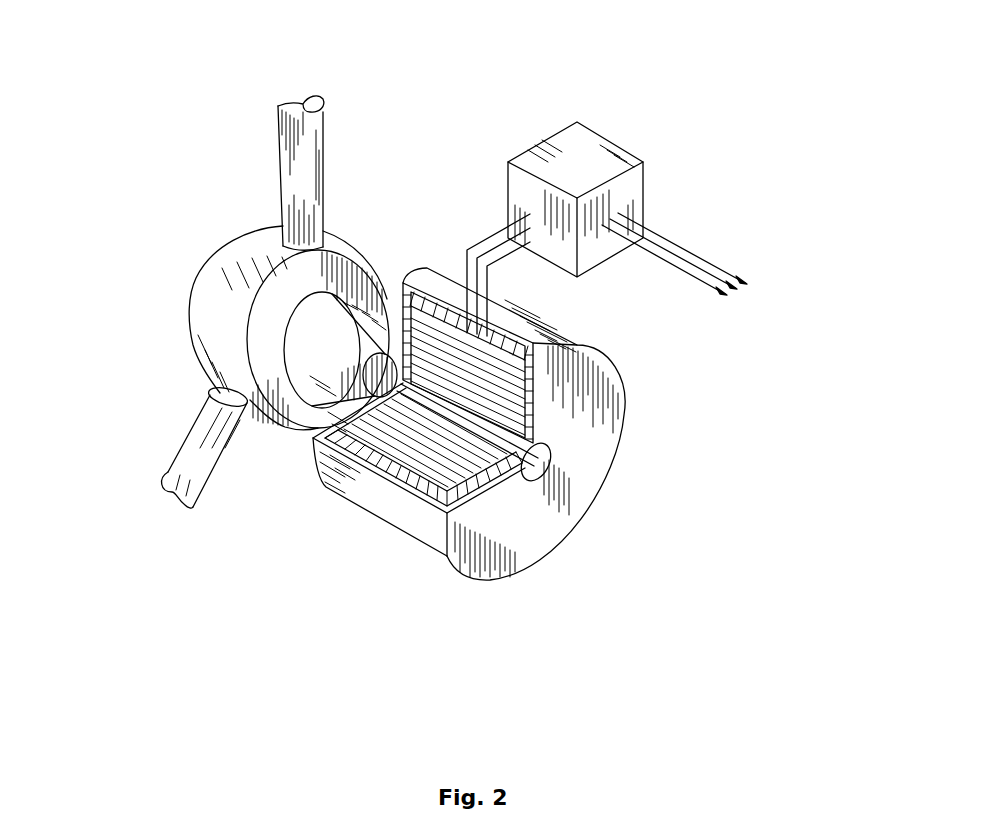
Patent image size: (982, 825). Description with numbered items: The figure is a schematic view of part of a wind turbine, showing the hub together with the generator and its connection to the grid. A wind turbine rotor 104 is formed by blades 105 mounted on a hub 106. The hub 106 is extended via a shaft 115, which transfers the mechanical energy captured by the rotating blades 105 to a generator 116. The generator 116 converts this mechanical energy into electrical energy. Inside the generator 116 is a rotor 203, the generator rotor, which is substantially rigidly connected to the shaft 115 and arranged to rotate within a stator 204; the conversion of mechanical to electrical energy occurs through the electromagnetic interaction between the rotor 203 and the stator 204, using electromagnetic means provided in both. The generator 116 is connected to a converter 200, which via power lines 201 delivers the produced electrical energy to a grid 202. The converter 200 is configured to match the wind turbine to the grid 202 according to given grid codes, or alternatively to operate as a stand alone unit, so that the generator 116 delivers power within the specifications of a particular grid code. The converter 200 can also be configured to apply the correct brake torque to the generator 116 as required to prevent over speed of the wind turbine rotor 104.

The wind turbine rotor 104 is at (141, 177).
The blades 105 is at (288, 158).
The hub 106 is at (217, 287).
The shaft 115 is at (507, 447).
The generator 116 is at (340, 560).
The converter 200 is at (558, 142).
The power lines 201 is at (688, 248).
The grid 202 is at (690, 333).
The rotor 203 is at (462, 376).
The stator 204 is at (420, 485).